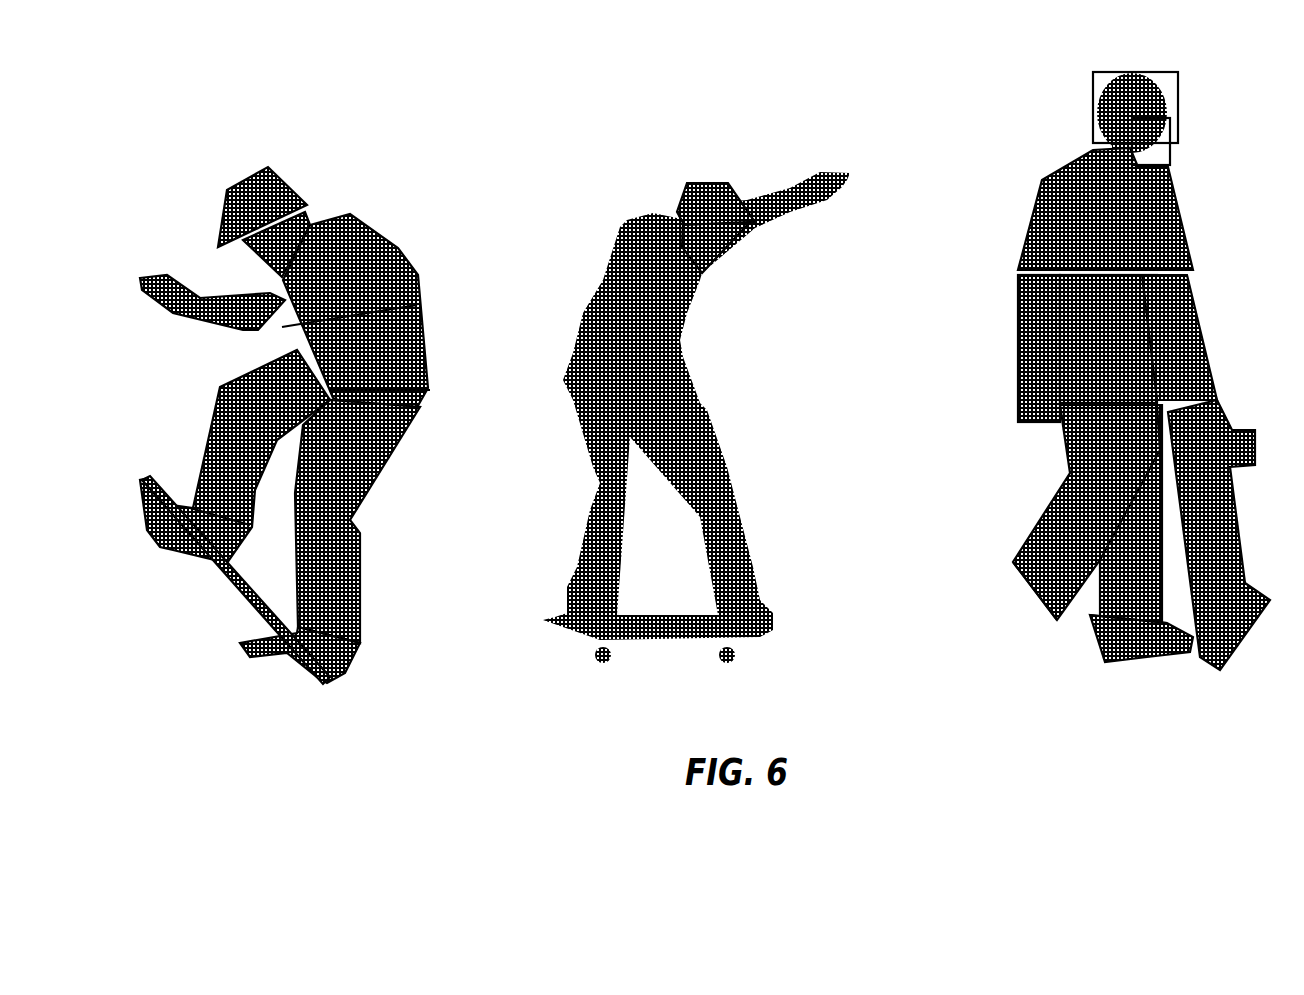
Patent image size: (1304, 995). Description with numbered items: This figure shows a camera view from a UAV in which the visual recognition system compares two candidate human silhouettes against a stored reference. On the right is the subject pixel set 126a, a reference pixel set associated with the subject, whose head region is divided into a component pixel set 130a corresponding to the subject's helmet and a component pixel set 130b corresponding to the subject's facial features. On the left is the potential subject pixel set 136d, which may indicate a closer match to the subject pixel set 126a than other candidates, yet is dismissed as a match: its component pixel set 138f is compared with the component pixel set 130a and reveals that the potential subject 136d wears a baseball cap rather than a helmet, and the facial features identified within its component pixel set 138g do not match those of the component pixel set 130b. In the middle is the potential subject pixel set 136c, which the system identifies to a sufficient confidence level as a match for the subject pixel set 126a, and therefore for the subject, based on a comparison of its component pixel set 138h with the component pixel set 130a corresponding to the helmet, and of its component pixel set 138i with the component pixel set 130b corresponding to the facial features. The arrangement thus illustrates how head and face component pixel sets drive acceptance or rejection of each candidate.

The potential subject pixel set 136d is at (482, 72).
The potential subject pixel set 136c is at (604, 110).
The subject pixel set 126a is at (1018, 80).
The component pixel set 138f is at (287, 177).
The component pixel set 138g is at (262, 262).
The component pixel set 138h is at (683, 193).
The component pixel set 138i is at (713, 270).
The component pixel set 130a is at (1092, 103).
The component pixel set 130b is at (1172, 143).